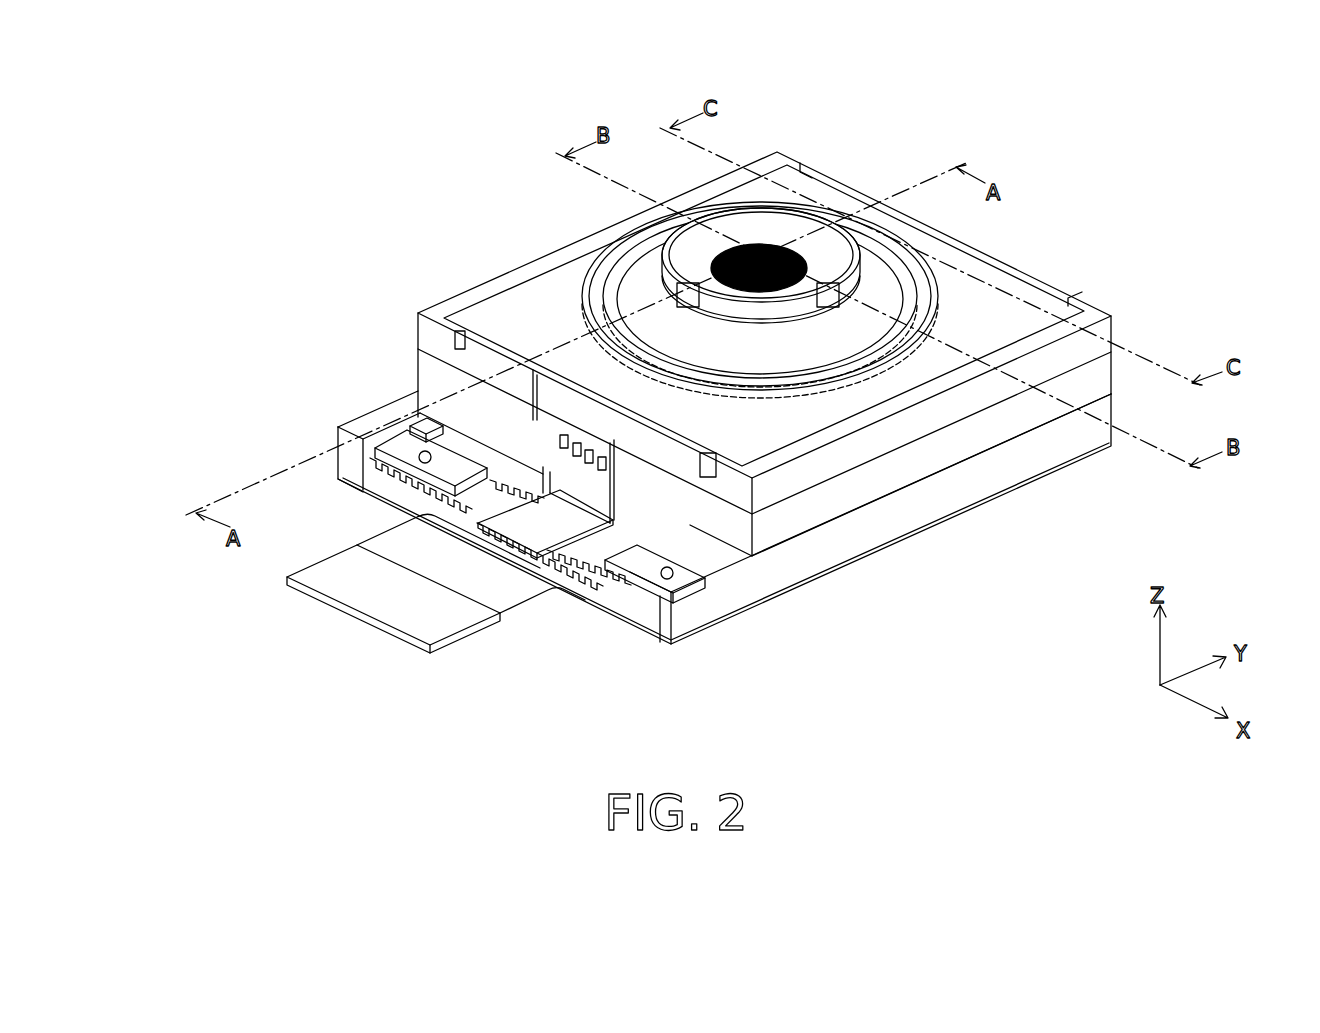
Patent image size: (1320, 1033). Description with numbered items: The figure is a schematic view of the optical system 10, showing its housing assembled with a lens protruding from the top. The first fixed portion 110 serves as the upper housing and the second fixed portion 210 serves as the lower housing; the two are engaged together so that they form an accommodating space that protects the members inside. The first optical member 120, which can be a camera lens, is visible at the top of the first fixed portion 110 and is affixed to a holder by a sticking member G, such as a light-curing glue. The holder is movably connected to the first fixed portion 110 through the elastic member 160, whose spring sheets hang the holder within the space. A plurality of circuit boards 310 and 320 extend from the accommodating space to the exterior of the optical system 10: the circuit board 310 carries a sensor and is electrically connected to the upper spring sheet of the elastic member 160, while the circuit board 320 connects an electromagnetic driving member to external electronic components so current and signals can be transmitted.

The optical system 10 is at (182, 88).
The first fixed portion 110 is at (1115, 332).
The first optical member 120 is at (687, 247).
The elastic member 160 is at (588, 285).
The sticking member G is at (592, 313).
The second fixed portion 210 is at (853, 540).
The circuit board 310 is at (543, 528).
The circuit board 320 is at (597, 548).